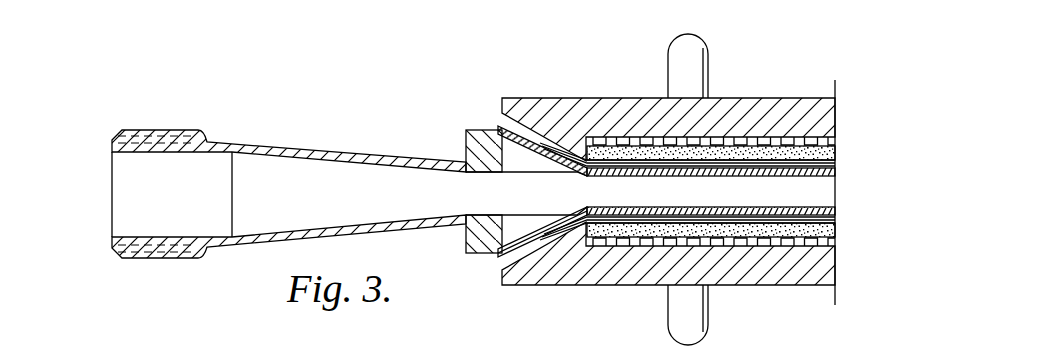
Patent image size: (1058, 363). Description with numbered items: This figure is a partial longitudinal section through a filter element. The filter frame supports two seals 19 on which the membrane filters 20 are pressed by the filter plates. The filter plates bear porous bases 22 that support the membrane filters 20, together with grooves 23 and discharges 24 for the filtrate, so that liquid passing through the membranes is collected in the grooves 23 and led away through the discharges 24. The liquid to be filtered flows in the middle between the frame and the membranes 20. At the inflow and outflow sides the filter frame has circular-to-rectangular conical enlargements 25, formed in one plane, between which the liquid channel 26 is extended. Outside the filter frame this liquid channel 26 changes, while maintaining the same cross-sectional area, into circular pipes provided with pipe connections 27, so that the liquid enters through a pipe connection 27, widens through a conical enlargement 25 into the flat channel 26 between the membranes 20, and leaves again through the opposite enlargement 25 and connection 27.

The seals 19 is at (502, 128).
The membrane filters 20 is at (598, 176).
The porous bases 22 is at (730, 150).
The grooves 23 is at (785, 138).
The discharges 24 is at (708, 50).
The conical enlargements 25 is at (466, 131).
The liquid channel 26 is at (140, 236).
The pipe connections 27 is at (163, 130).